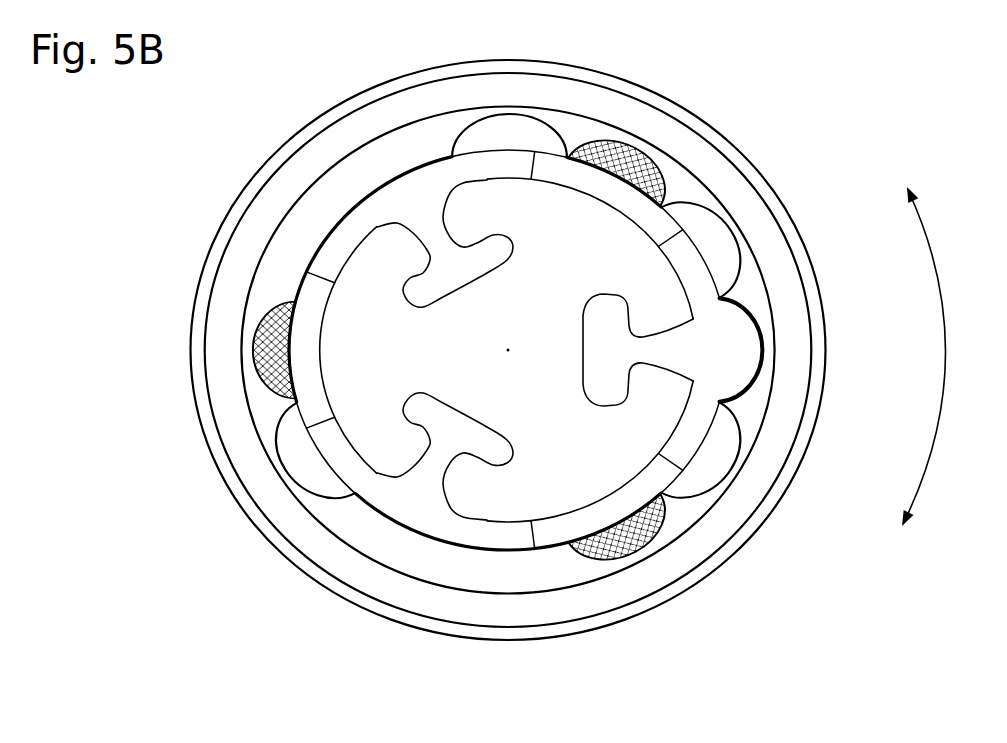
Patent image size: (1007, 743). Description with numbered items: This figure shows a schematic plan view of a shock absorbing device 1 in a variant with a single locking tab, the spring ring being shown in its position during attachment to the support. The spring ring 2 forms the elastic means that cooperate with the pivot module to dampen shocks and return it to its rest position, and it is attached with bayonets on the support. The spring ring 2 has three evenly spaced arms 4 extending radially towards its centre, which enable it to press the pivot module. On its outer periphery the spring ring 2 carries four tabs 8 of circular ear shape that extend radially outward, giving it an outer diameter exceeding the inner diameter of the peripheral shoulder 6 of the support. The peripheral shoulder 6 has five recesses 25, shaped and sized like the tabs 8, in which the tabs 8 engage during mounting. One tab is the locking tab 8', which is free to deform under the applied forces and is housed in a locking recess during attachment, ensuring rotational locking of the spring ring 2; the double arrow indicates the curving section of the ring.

The shock absorbing device 1 is at (801, 112).
The spring ring 2 is at (389, 534).
The arms 4 is at (650, 357).
The peripheral shoulder 6 is at (753, 290).
The tabs 8 is at (430, 350).
The locking tab 8' is at (826, 350).
The recesses 25 is at (483, 108).